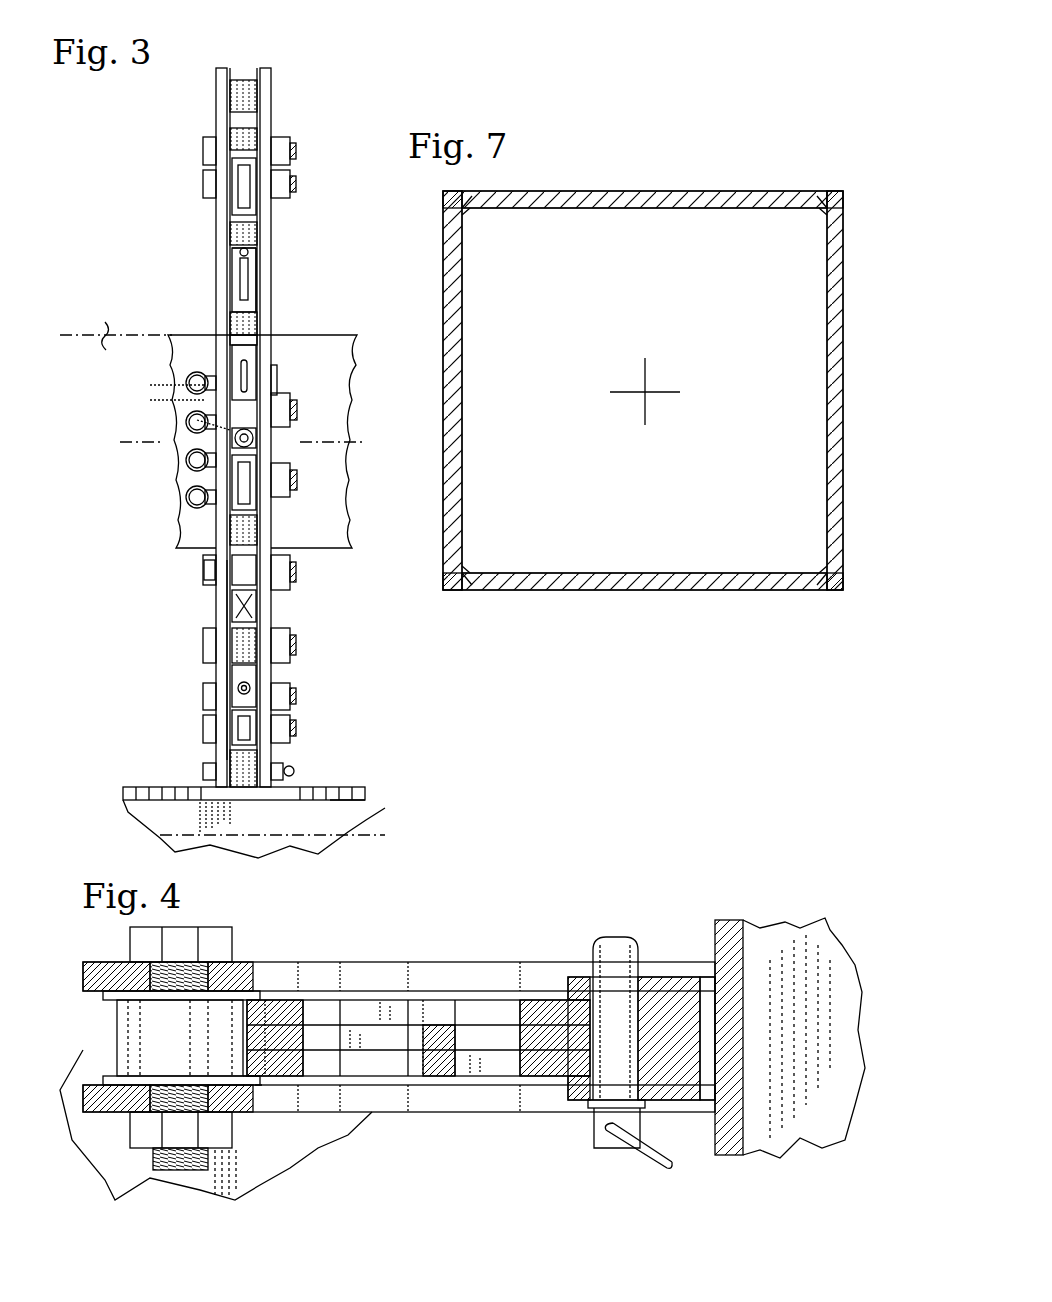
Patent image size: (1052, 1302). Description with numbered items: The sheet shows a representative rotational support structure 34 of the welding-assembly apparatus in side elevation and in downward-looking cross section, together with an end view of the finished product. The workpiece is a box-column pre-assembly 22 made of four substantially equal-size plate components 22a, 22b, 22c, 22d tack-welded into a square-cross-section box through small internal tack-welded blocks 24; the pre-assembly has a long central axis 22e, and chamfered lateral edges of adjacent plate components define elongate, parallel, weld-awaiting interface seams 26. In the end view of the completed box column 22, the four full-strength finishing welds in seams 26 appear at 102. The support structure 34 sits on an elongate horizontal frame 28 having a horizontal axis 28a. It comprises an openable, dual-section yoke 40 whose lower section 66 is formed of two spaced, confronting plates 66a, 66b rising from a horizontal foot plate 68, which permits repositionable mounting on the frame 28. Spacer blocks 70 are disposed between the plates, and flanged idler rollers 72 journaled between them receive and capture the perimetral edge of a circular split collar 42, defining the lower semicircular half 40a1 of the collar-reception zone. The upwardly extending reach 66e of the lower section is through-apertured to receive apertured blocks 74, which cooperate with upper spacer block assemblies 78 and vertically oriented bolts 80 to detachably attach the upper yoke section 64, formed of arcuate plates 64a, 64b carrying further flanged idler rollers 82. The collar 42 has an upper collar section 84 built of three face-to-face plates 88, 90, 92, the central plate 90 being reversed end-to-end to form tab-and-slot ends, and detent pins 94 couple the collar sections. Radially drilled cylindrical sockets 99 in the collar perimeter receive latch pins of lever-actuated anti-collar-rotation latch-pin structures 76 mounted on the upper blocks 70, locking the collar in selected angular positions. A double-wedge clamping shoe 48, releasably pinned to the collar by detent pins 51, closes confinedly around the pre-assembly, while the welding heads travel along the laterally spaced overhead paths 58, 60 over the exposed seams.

In FIG. 3, the box-column pre-assembly 22 is at (237, 420).
In FIG. 7, the box-column pre-assembly 22 is at (645, 378).
In FIG. 4, the box-column pre-assembly 22 is at (790, 1000).
In FIG. 7, the plate component 22a is at (685, 200).
In FIG. 3, the plate component 22b is at (345, 362).
In FIG. 7, the plate component 22b is at (832, 388).
In FIG. 7, the plate component 22c is at (632, 578).
In FIG. 4, the plate component 22c is at (810, 942).
In FIG. 7, the plate component 22d is at (455, 378).
In FIG. 4, the plate component 22d is at (730, 920).
In FIG. 3, the long central axis 22e is at (176, 470).
In FIG. 7, the long central axis 22e is at (647, 384).
In FIG. 7, the internal tack-welded block 24 is at (476, 220).
In FIG. 7, the weld-awaiting interface seam 26 is at (468, 192).
In FIG. 3, the frame 28 is at (282, 829).
In FIG. 4, the frame 28 is at (338, 1144).
In FIG. 3, the horizontal axis of frame 28a is at (380, 812).
In FIG. 3, the rotational support structure 34 is at (118, 188).
In FIG. 4, the rotational support structure 34 is at (378, 1044).
In FIG. 3, the yoke 40 is at (222, 417).
In FIG. 4, the yoke 40 is at (378, 1044).
In FIG. 4, the lower semicircular half of collar-reception zone 40a1 is at (258, 1096).
In FIG. 3, the collar 42 is at (230, 614).
In FIG. 4, the collar 42 is at (285, 996).
In FIG. 4, the double-wedge clamping shoe 48 is at (686, 972).
In FIG. 3, the detent pin 51 is at (188, 388).
In FIG. 4, the detent pin 51 is at (600, 1085).
In FIG. 3, the welding head path 58 is at (124, 330).
In FIG. 3, the welding head path 60 is at (98, 334).
In FIG. 3, the upper yoke section 64 is at (246, 417).
In FIG. 3, the plate of upper yoke section 64a is at (216, 72).
In FIG. 3, the plate of upper yoke section 64b is at (271, 72).
In FIG. 3, the lower yoke section 66 is at (274, 604).
In FIG. 4, the lower yoke section 66 is at (381, 1036).
In FIG. 3, the plate of lower yoke section 66a is at (216, 680).
In FIG. 4, the plate of lower yoke section 66a is at (114, 1108).
In FIG. 3, the plate of lower yoke section 66b is at (262, 670).
In FIG. 4, the plate of lower yoke section 66b is at (114, 970).
In FIG. 3, the upwardly extending reach 66e is at (271, 384).
In FIG. 3, the foot plate 68 is at (290, 790).
In FIG. 3, the spacer block 70 is at (230, 772).
In FIG. 3, the idler roller 72 is at (256, 604).
In FIG. 4, the idler roller 72 is at (117, 1020).
In FIG. 3, the apertured block 74 is at (232, 358).
In FIG. 3, the anti-collar-rotation latch-pin structure 76 is at (256, 438).
In FIG. 3, the upper spacer block assembly 78 is at (230, 340).
In FIG. 3, the bolt 80 is at (232, 322).
In FIG. 3, the idler roller 82 is at (250, 178).
In FIG. 3, the upper collar section 84 is at (244, 257).
In FIG. 3, the collar plate 88 is at (240, 262).
In FIG. 3, the central collar plate 90 is at (246, 248).
In FIG. 3, the collar plate 92 is at (258, 252).
In FIG. 3, the detent pin 94 is at (197, 436).
In FIG. 3, the cylindrical socket 99 is at (248, 252).
In FIG. 7, the full-strength finishing weld 102 is at (463, 194).